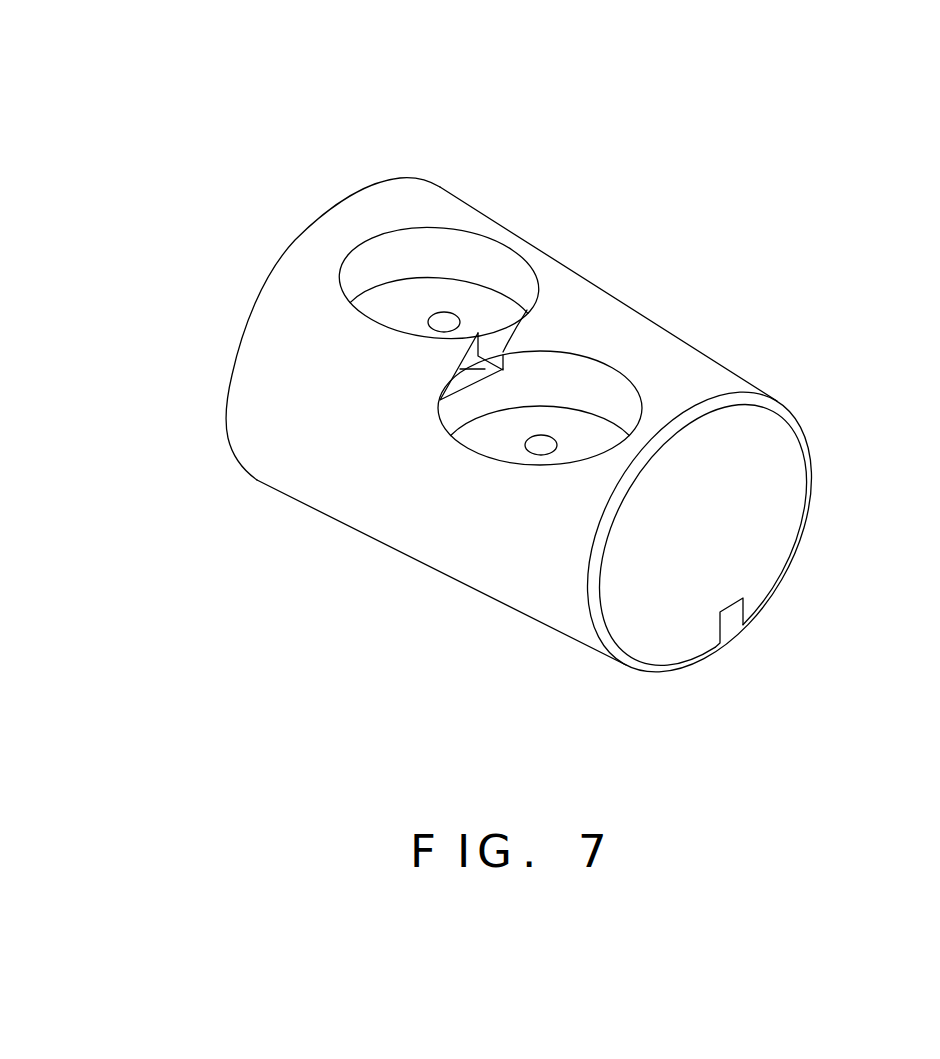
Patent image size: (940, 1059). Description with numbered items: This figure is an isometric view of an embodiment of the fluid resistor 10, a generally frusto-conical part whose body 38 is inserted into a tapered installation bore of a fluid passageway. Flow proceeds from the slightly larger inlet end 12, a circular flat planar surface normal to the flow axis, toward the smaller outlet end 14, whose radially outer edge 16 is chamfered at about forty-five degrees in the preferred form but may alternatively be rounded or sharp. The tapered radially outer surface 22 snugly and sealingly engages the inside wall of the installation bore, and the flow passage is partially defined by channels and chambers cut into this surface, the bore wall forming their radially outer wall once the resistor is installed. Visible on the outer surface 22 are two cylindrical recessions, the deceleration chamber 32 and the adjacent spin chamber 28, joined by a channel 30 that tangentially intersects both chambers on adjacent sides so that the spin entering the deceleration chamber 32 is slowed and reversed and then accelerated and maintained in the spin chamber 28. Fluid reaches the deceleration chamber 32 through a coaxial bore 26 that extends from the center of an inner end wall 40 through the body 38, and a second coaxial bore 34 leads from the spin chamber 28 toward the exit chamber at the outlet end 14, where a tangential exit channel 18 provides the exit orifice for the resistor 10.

The fluid resistor 10 is at (522, 105).
The inlet end 12 is at (225, 393).
The outlet end 14 is at (760, 550).
The radially outer edge 16 is at (788, 412).
The exit channel 18 is at (730, 620).
The radially outer surface 22 is at (293, 500).
The coaxial bore 26 is at (445, 322).
The spin chamber 28 is at (578, 447).
The channel 30 is at (445, 377).
The deceleration chamber 32 is at (372, 273).
The second coaxial bore 34 is at (538, 447).
The body 38 is at (638, 355).
The inner end wall 40 is at (520, 420).